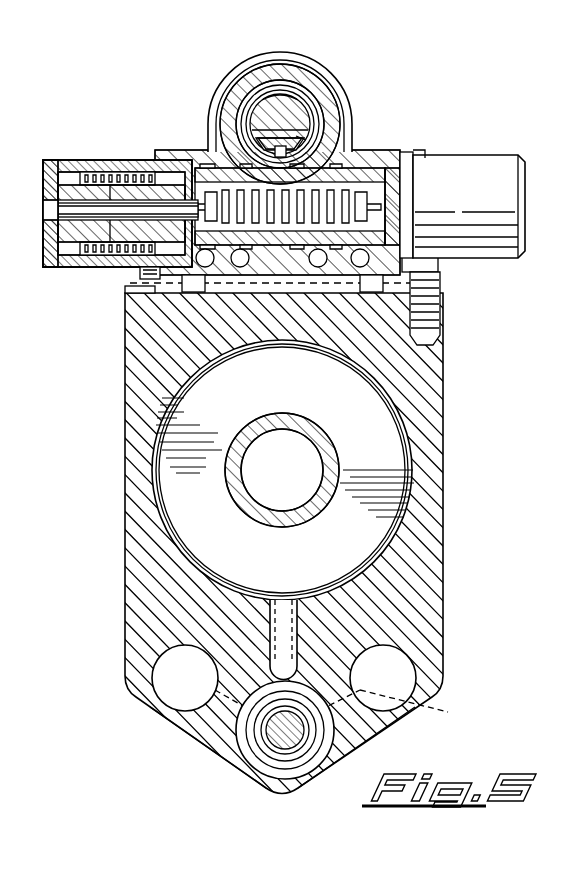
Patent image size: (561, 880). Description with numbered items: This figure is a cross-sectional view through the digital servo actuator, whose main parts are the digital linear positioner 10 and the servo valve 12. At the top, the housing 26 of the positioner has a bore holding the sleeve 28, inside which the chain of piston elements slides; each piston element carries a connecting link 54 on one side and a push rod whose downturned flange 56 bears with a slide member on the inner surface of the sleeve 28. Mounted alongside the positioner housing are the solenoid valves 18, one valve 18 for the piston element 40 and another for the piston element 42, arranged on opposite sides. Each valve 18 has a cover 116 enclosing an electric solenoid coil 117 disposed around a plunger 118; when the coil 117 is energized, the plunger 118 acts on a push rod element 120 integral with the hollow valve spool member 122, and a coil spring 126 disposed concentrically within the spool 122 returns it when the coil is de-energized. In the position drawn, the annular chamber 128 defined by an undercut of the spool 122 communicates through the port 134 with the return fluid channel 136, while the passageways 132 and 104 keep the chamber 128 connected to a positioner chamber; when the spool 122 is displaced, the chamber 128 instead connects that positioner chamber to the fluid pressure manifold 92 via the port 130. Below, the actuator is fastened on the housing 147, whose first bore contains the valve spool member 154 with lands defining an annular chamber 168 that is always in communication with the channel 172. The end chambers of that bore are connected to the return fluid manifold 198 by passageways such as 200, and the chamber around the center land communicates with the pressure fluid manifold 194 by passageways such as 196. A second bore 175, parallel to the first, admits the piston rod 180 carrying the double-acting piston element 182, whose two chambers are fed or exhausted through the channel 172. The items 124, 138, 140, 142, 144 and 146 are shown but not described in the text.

The digital linear positioner 10 is at (343, 77).
The servo valve 12 is at (263, 772).
The valve 18 is at (100, 162).
The housing 26 is at (248, 80).
The sleeve 28 is at (297, 92).
The piston element 40 is at (85, 268).
The piston element 42 is at (504, 255).
The connecting link 54 is at (270, 120).
The flange 56 is at (273, 100).
The fluid pressure manifold 92 is at (356, 262).
The passageway 104 is at (297, 140).
The cover 116 is at (50, 170).
The electric solenoid coil 117 is at (115, 177).
The plunger 118 is at (60, 214).
The push rod element 120 is at (176, 212).
The valve spool member 122 is at (192, 153).
The end plug 124 is at (373, 157).
The coil spring 126 is at (207, 150).
The annular chamber 128 is at (262, 257).
The port 130 is at (320, 257).
The passageway 132 is at (263, 176).
The port 134 is at (195, 292).
The return fluid channel 136 is at (235, 265).
The fastener 138 is at (125, 290).
The plug 140 is at (372, 283).
The bolt head 142 is at (412, 266).
The piston 144 is at (121, 215).
The fastener 146 is at (130, 273).
The housing 147 is at (423, 395).
The valve spool member 154 is at (300, 733).
The annular chamber 168 is at (262, 733).
The channel 172 is at (285, 660).
The second bore 175 is at (393, 520).
The piston rod 180 is at (330, 440).
The double-acting piston element 182 is at (393, 473).
The pressure fluid manifold 194 is at (397, 697).
The passageway 196 is at (448, 712).
The return fluid manifold 198 is at (173, 693).
The passageway 200 is at (175, 733).